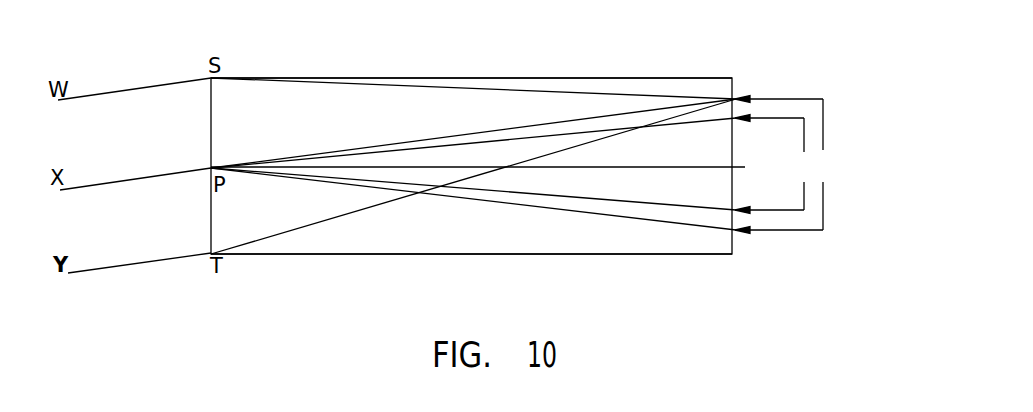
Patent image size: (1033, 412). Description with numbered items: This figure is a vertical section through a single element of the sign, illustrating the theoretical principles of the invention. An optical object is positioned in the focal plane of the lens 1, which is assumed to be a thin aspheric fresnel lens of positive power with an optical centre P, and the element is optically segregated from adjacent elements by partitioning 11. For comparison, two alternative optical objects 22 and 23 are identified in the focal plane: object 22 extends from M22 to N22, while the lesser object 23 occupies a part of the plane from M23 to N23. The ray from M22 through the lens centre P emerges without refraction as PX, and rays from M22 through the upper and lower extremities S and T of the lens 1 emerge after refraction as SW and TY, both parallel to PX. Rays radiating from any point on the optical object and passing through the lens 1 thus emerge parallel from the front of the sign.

The lens 1 is at (211, 225).
The partitioning 11 is at (588, 78).
The optical object 22 is at (792, 164).
The optical object 23 is at (770, 164).
The upper extremity of object 22 M22 is at (736, 97).
The upper extremity of object 23 M23 is at (736, 117).
The lower extremity of object 23 N23 is at (738, 214).
The lower extremity of object 22 N22 is at (738, 234).